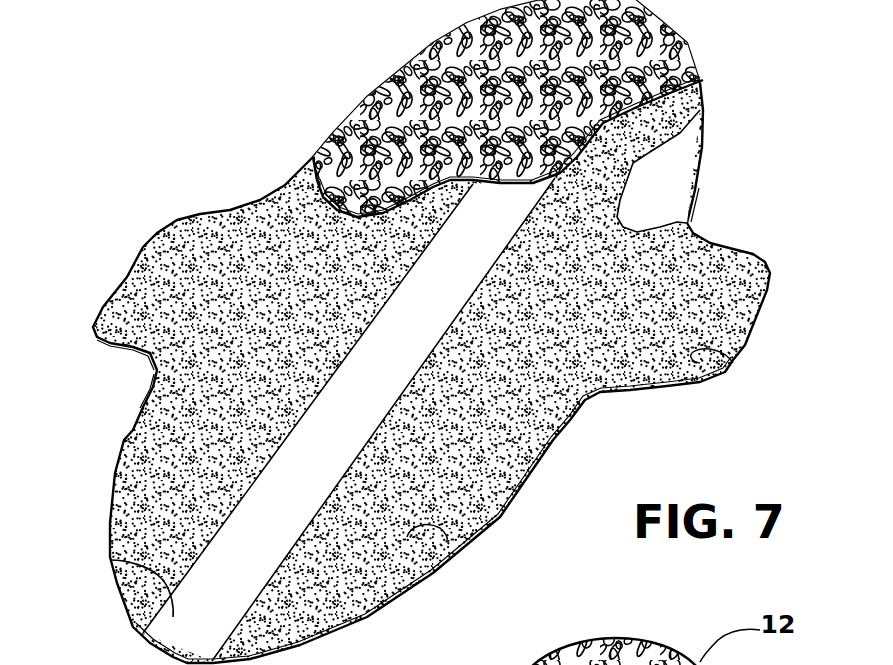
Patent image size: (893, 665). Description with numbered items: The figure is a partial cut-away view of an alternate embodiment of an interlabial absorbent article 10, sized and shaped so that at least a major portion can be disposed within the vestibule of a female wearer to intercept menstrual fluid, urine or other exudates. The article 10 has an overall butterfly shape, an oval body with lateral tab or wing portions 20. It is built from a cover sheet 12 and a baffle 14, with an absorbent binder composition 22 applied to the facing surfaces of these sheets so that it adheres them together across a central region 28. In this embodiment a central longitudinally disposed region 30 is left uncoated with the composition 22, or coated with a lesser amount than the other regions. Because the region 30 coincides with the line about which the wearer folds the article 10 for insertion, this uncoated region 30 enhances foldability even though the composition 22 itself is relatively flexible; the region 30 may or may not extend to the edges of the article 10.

The interlabial absorbent article 10 is at (270, 132).
The cover sheet 12 is at (665, 18).
The baffle 14 is at (668, 182).
The wing portions 20 is at (157, 277).
The absorbent binder composition 22 is at (163, 395).
The central region 28 is at (447, 540).
The central longitudinally disposed region 30 is at (110, 560).